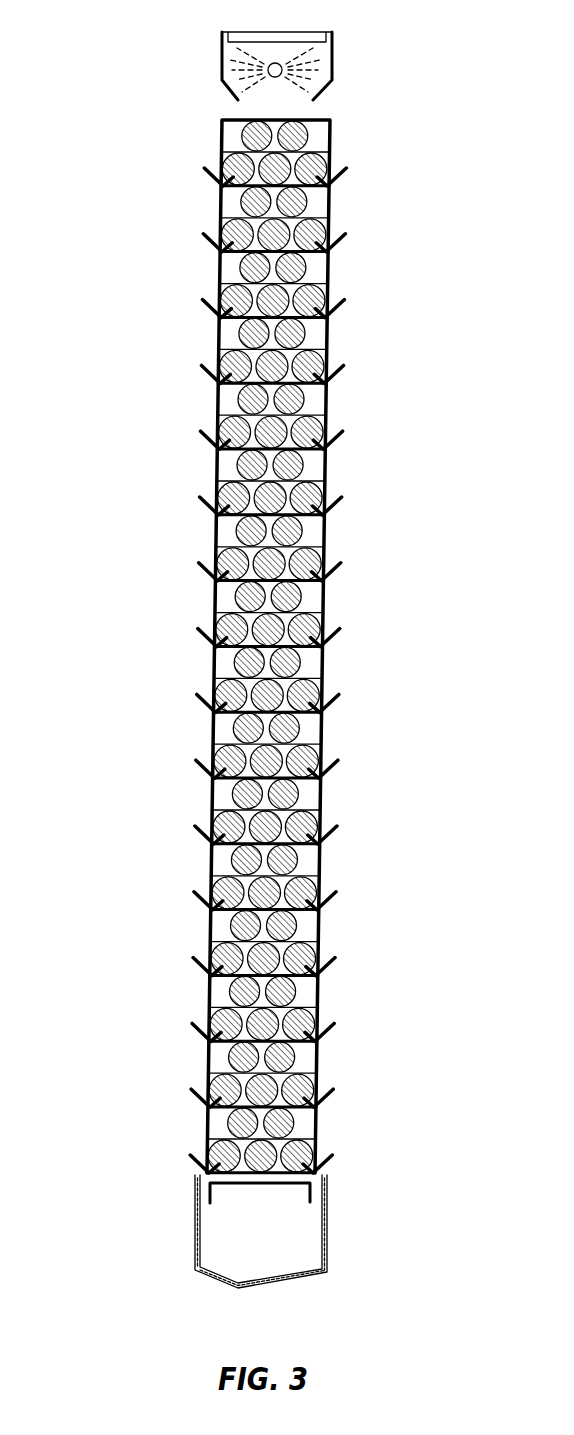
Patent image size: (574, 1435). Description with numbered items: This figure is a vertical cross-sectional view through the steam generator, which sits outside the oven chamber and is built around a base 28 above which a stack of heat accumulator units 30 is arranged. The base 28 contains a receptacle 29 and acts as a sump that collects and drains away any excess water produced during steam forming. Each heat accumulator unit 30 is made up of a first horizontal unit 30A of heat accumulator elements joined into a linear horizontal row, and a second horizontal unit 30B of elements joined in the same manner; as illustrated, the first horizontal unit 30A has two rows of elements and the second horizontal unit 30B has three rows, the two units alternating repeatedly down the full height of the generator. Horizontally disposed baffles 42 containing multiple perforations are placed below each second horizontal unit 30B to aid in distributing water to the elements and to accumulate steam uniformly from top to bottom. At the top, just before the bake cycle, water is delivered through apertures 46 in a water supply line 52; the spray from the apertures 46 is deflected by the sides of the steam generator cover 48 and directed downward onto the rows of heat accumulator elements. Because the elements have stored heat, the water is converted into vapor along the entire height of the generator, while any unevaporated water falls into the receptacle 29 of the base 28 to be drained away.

The base 28 is at (211, 1200).
The receptacle 29 is at (327, 1220).
The heat accumulator units 30 is at (338, 342).
The first horizontal unit 30A is at (240, 337).
The second horizontal unit 30B is at (217, 553).
The baffles 42 is at (204, 840).
The apertures 46 is at (268, 74).
The steam generator cover 48 is at (328, 94).
The water supply line 52 is at (276, 63).